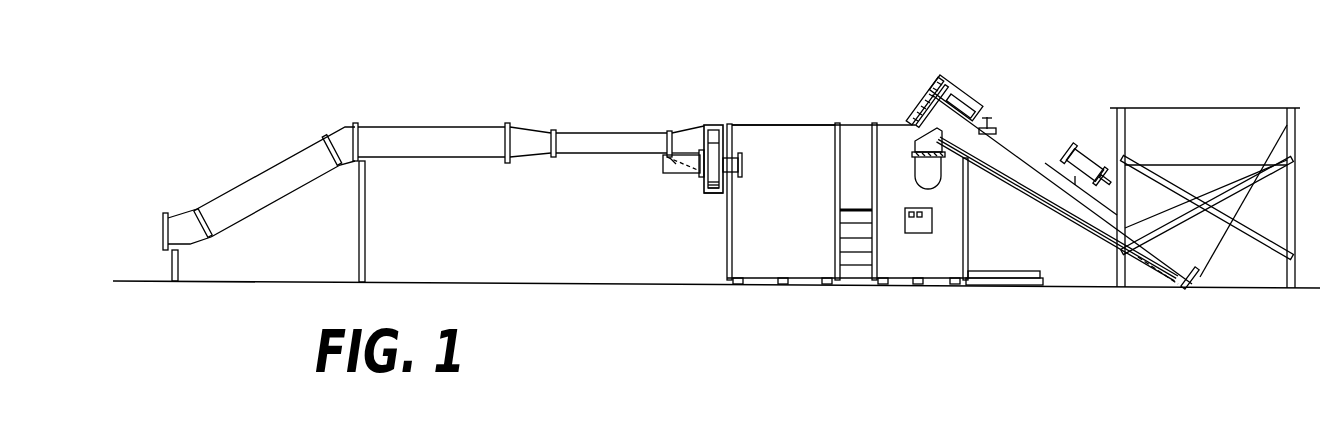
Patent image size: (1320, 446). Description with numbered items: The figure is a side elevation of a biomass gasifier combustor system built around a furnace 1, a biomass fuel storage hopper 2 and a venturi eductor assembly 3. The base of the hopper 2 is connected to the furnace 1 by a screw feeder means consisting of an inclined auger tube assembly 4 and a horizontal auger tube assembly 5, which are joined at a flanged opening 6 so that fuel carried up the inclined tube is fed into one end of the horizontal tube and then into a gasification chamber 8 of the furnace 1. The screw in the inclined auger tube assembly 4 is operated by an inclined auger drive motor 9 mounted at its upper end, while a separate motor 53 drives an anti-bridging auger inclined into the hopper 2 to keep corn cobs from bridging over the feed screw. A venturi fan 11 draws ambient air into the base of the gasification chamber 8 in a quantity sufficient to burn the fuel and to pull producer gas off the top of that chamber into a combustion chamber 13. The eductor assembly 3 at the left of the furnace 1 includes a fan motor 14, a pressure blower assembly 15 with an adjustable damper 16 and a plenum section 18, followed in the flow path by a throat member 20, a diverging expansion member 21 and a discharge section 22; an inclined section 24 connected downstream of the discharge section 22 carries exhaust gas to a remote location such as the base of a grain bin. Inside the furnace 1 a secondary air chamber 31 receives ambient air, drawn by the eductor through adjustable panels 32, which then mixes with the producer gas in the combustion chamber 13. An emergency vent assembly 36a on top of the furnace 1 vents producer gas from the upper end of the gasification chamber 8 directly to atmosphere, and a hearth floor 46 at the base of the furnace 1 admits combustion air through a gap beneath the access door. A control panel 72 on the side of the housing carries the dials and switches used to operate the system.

The furnace 1 is at (843, 179).
The biomass fuel storage hopper 2 is at (1213, 104).
The venturi eductor assembly 3 is at (697, 159).
The inclined auger tube assembly 4 is at (1052, 173).
The horizontal auger tube assembly 5 is at (938, 178).
The flanged opening 6 is at (915, 152).
The gasification chamber 8 is at (955, 253).
The inclined auger drive motor 9 is at (975, 93).
The venturi fan 11 is at (703, 195).
The combustion chamber 13 is at (748, 250).
The fan motor 14 is at (742, 165).
The pressure blower assembly 15 is at (714, 193).
The adjustable damper 16 is at (662, 163).
The plenum section 18 is at (716, 126).
The throat member 20 is at (597, 133).
The diverging expansion member 21 is at (530, 130).
The discharge section 22 is at (428, 127).
The inclined section 24 is at (247, 180).
The secondary air chamber 31 is at (853, 130).
The adjustable panels 32 is at (866, 240).
The emergency vent assembly 36a is at (999, 124).
The hearth floor 46 is at (1012, 275).
The motor 53 is at (1090, 148).
The control panel 72 is at (936, 217).